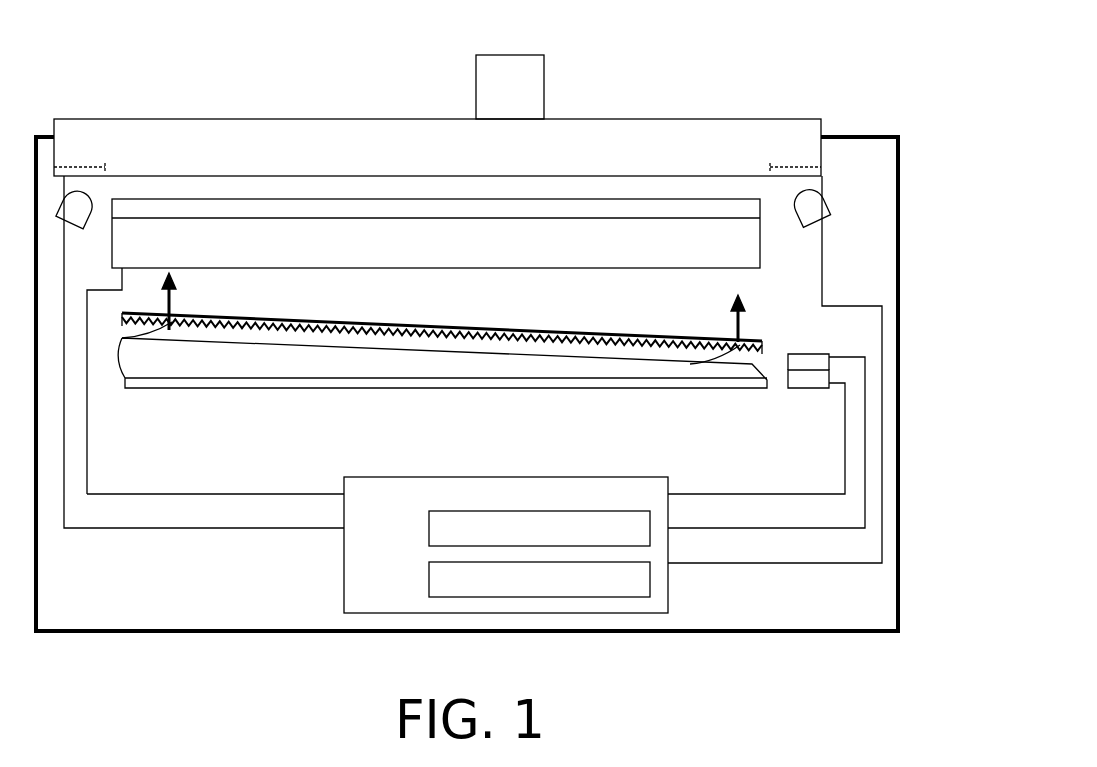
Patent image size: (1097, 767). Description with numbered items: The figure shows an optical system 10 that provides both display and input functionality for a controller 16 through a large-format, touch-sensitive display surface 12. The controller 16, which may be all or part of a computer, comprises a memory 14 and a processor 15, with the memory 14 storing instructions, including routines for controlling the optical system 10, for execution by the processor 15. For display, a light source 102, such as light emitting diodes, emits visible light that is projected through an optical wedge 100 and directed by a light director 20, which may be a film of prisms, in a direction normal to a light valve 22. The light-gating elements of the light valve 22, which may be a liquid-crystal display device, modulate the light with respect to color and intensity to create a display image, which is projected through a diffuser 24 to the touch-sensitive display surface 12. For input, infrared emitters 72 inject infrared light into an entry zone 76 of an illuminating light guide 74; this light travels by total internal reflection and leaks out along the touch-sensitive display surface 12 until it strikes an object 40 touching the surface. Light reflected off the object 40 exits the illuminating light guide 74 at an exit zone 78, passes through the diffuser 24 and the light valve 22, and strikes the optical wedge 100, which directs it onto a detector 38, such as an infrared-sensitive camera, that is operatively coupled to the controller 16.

The optical system 10 is at (347, 50).
The touch-sensitive display surface 12 is at (310, 118).
The memory 14 is at (429, 528).
The processor 15 is at (429, 580).
The controller 16 is at (395, 477).
The light director 20 is at (432, 330).
The light valve 22 is at (449, 253).
The diffuser 24 is at (270, 208).
The detector 38 is at (805, 385).
The object 40 is at (523, 99).
The infrared emitters 72 is at (70, 216).
The illuminating light guide 74 is at (424, 159).
The entry zone 76 is at (80, 166).
The exit zone 78 is at (590, 192).
The optical wedge 100 is at (177, 374).
The light source 102 is at (797, 362).